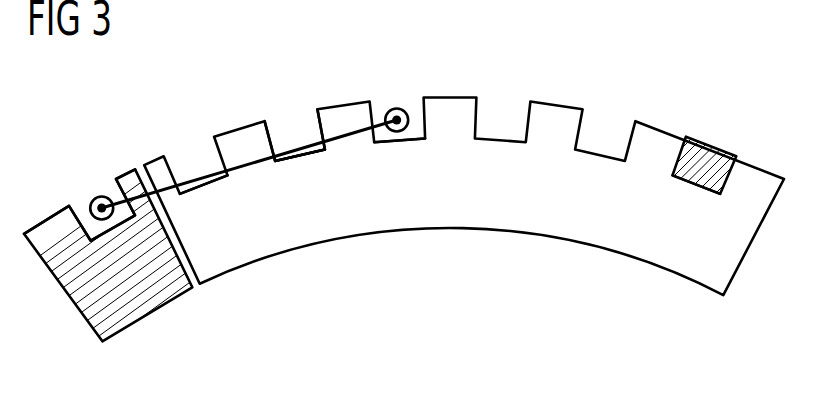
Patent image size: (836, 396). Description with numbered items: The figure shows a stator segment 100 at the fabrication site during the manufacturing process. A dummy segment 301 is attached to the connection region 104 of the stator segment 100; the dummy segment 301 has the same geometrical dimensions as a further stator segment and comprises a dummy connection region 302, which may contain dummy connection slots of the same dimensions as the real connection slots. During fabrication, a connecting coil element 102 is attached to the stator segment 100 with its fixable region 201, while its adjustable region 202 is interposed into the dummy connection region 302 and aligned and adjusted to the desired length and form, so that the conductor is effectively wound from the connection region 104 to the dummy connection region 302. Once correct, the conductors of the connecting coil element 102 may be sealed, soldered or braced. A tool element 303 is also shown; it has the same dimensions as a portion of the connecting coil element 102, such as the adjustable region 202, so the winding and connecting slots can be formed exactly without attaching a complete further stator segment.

The stator segment 100 is at (482, 216).
The connecting coil element 102 is at (297, 148).
The connection region 104 is at (420, 148).
The fixable region 201 is at (397, 108).
The adjustable region 202 is at (102, 196).
The dummy segment 301 is at (152, 288).
The dummy connection region 302 is at (127, 152).
The tool element 303 is at (714, 142).